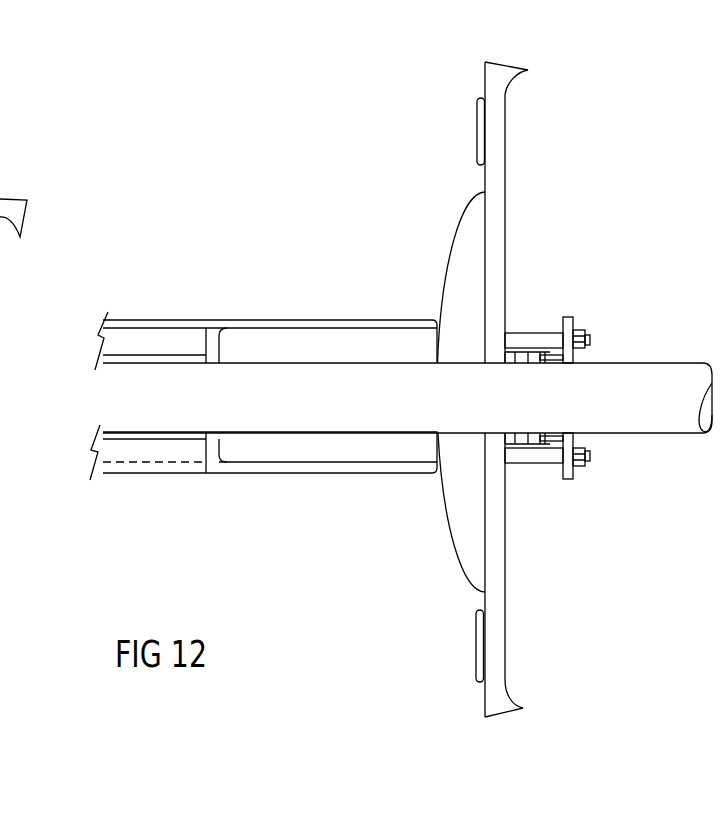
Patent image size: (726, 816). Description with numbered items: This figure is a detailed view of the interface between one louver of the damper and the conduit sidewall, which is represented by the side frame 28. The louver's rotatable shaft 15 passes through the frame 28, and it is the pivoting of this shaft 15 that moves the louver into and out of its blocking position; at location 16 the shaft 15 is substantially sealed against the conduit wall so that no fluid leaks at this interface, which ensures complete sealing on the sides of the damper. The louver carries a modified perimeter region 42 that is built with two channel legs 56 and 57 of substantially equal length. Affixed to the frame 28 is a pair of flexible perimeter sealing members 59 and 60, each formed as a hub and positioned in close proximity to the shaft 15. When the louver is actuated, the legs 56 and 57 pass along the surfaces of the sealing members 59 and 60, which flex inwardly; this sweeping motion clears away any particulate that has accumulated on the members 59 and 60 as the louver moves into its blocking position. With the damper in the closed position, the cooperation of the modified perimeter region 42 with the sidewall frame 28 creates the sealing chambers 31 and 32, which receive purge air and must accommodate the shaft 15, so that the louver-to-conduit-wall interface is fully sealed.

The rotatable shaft 15 is at (632, 363).
The shaft sealing location 16 is at (493, 343).
The side frame 28 is at (506, 145).
The upper perimeter conduit-louver seal-air chamber 31 is at (242, 338).
The intermediate perimeter conduit-louver seal-air chamber 32 is at (263, 452).
The modified perimeter region 42 is at (300, 278).
The channel leg 56 is at (397, 292).
The channel leg 57 is at (307, 472).
The flexible perimeter sealing member 59 is at (452, 528).
The flexible perimeter sealing member 60 is at (457, 243).